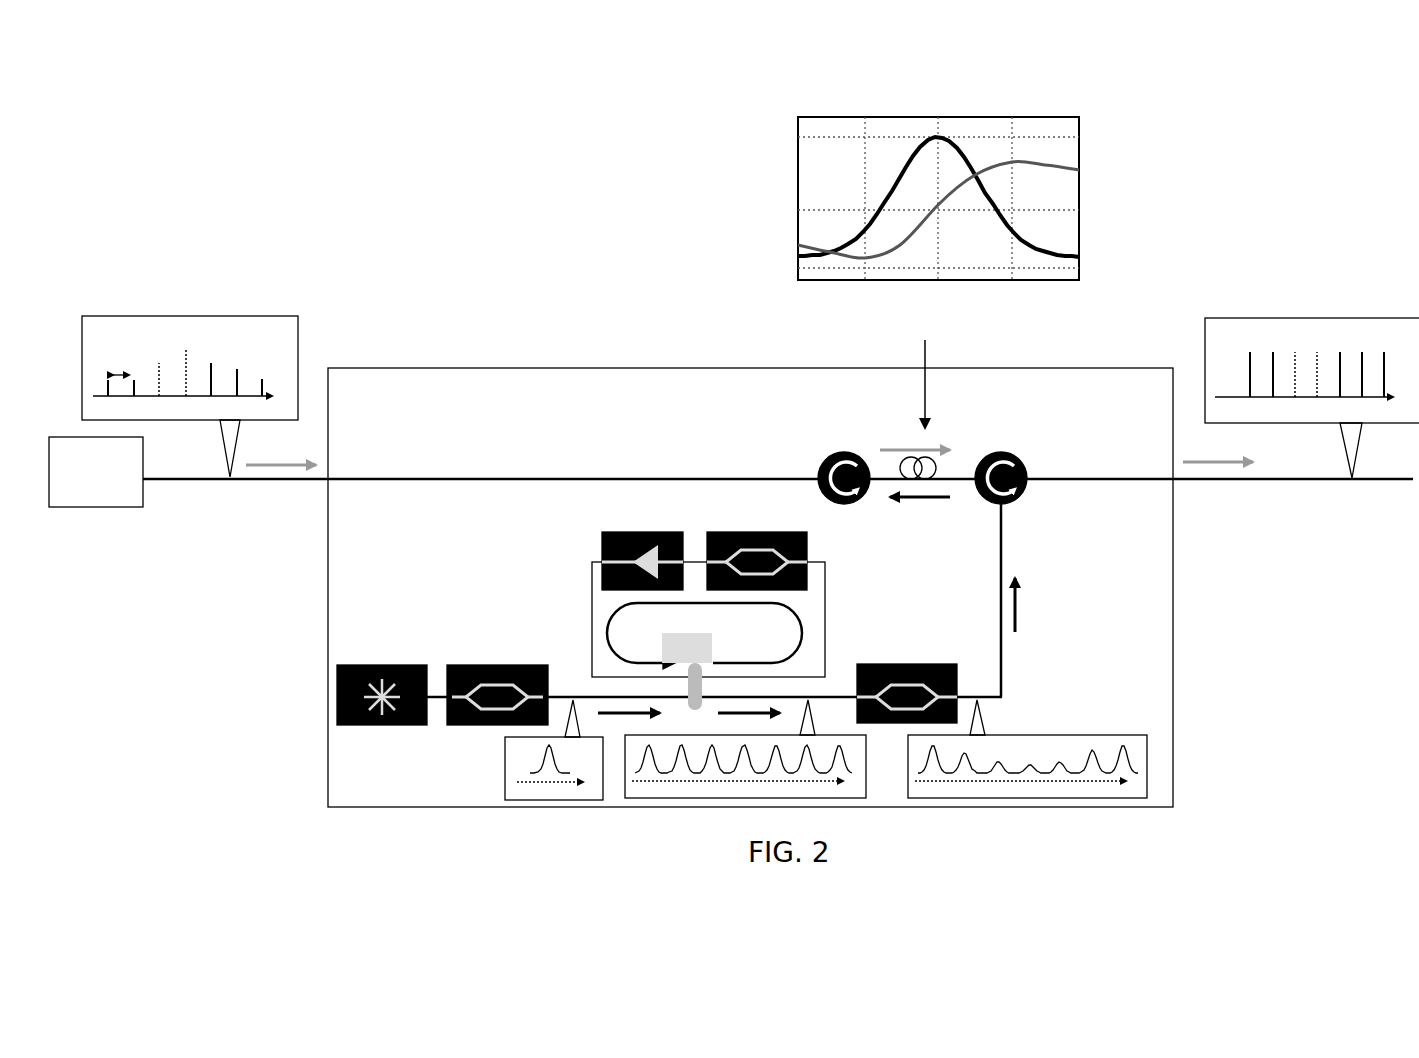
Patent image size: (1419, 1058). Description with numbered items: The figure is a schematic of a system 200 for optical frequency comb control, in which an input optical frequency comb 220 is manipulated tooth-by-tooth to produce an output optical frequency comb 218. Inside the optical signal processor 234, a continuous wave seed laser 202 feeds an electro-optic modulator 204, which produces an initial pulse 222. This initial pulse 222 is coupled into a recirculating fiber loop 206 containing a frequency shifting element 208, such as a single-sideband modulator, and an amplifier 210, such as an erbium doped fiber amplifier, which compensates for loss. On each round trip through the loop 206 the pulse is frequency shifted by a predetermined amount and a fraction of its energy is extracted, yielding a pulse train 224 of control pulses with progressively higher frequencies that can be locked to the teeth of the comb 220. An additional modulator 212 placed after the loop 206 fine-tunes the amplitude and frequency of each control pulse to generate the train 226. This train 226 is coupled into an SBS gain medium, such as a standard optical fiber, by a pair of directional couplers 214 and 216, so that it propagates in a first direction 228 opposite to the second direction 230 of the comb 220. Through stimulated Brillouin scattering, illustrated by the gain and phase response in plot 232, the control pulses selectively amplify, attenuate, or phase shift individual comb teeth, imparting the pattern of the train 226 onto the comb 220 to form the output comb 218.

The system 200 is at (1280, 156).
The seed laser 202 is at (353, 663).
The electro-optic modulator 204 is at (475, 663).
The recirculating fiber loop 206 is at (592, 594).
The frequency shifting element 208 is at (755, 530).
The amplifier 210 is at (625, 531).
The additional modulator 212 is at (898, 662).
The directional coupler 214 is at (990, 448).
The directional coupler 216 is at (832, 450).
The output optical frequency comb 218 is at (1272, 318).
The optical frequency comb 220 is at (244, 316).
The initial pulse 222 is at (533, 800).
The pulse train 224 is at (688, 798).
The train 226 is at (985, 800).
The first direction 228 is at (914, 502).
The second direction 230 is at (944, 440).
The plot 232 is at (798, 186).
The optical signal processor 234 is at (643, 368).